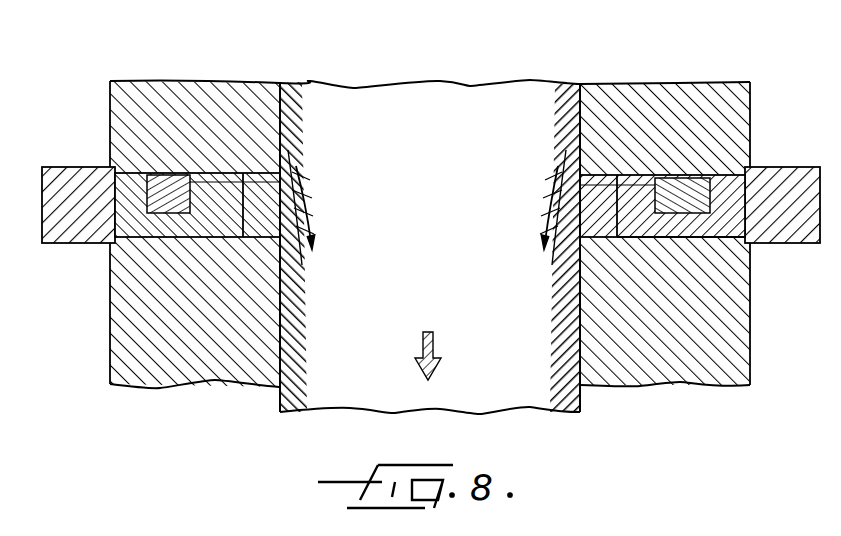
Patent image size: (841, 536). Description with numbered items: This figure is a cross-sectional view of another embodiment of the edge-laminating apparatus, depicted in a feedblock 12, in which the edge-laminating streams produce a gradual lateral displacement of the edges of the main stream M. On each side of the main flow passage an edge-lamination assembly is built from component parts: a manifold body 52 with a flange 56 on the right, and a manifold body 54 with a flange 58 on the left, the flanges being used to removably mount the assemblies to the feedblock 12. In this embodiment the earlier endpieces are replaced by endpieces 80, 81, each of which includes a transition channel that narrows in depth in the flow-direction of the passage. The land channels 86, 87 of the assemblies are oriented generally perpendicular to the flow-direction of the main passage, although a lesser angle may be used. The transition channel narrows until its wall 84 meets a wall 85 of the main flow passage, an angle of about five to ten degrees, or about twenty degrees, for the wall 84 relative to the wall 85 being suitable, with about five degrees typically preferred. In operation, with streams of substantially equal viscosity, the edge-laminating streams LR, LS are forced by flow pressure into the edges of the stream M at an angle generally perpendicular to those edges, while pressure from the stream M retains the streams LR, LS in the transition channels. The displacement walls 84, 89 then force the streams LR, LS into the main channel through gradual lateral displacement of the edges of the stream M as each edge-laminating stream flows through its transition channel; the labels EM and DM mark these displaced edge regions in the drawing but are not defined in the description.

The feedblock 12 is at (163, 72).
The flange 58 is at (73, 170).
The flange 56 is at (789, 170).
The manifold body 54 is at (190, 238).
The manifold body 52 is at (682, 240).
The land channel 87 is at (239, 173).
The land channel 86 is at (618, 228).
The endpiece 81 is at (243, 238).
The endpiece 80 is at (632, 240).
The displacement-effecting wall 89 is at (308, 212).
The wall 84 is at (546, 214).
The wall 85 is at (583, 296).
The edge-laminating stream LS is at (196, 186).
The edge-laminating stream LR is at (660, 186).
The left edge material EM is at (303, 183).
The right edge material DM is at (553, 182).
The main stream M is at (444, 264).